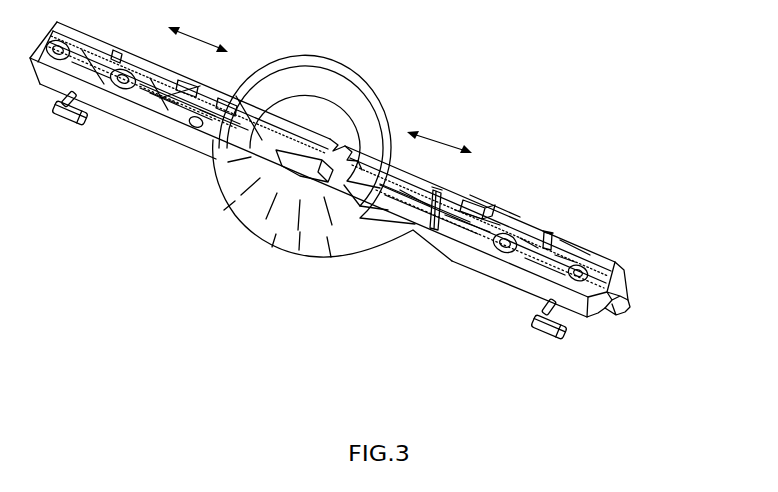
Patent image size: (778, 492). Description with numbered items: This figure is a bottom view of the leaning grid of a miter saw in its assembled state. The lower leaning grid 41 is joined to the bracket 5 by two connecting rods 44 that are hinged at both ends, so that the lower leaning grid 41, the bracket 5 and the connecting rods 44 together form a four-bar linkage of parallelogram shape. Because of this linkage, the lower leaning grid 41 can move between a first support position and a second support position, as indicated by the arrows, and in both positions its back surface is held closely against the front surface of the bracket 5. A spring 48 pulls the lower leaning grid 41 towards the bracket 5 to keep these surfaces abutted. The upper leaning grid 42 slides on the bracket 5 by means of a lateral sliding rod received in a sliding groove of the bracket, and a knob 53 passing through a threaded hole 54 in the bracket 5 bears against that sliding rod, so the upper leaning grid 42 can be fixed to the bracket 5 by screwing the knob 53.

The bracket 5 is at (288, 270).
The lower leaning grid 41 is at (633, 260).
The upper leaning grid 42 is at (642, 298).
The connecting rod 44 is at (552, 231).
The spring 48 is at (497, 212).
The knob 53 is at (543, 320).
The threaded hole 54 is at (546, 302).